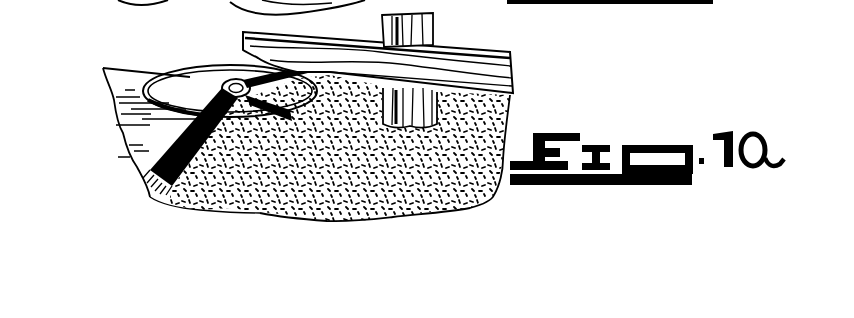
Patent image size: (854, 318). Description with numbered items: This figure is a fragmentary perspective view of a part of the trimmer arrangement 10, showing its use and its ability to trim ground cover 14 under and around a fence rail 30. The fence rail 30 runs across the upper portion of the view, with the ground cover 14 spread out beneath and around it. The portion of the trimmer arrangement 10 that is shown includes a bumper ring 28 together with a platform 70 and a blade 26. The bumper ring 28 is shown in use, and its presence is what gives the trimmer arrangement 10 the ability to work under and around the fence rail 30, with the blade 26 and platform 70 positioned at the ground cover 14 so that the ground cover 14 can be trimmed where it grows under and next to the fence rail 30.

The trimmer arrangement 10 is at (110, 152).
The ground cover 14 is at (390, 192).
The blade 26 is at (262, 118).
The bumper ring 28 is at (215, 67).
The fence rail 30 is at (302, 60).
The platform 70 is at (117, 108).